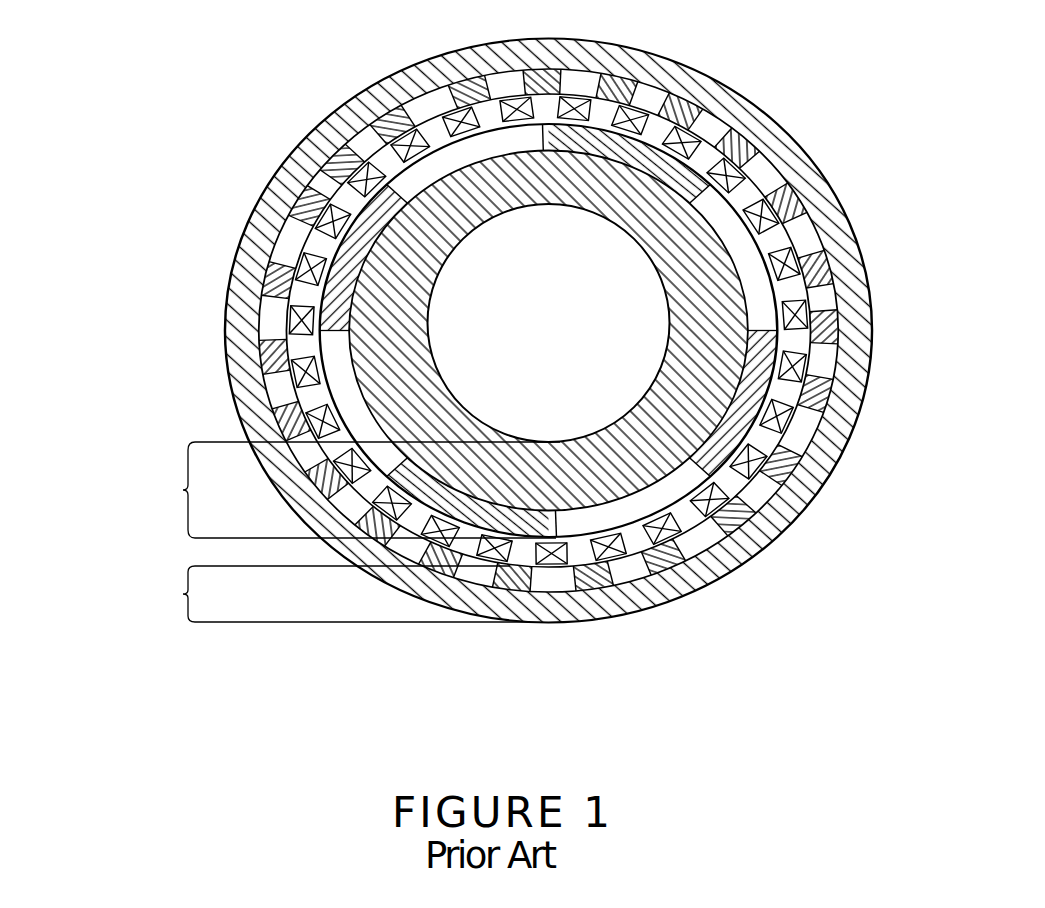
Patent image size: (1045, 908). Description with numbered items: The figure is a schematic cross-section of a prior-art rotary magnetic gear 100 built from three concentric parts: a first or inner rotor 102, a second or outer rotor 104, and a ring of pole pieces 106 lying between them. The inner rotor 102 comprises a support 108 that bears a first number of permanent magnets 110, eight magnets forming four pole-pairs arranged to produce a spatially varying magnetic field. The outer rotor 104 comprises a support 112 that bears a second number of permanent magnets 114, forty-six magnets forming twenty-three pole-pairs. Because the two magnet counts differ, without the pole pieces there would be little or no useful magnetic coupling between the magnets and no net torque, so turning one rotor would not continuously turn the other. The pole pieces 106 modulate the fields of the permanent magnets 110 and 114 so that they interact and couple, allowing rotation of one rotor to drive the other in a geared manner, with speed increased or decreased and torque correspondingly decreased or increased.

The rotary magnetic gear 100 is at (592, 661).
The first or inner rotor 102 is at (667, 380).
The second or outer rotor 104 is at (360, 102).
The pole pieces 106 is at (793, 418).
The support 108 is at (543, 442).
The permanent magnets 110 is at (333, 355).
The support 112 is at (798, 205).
The permanent magnets 114 is at (827, 305).